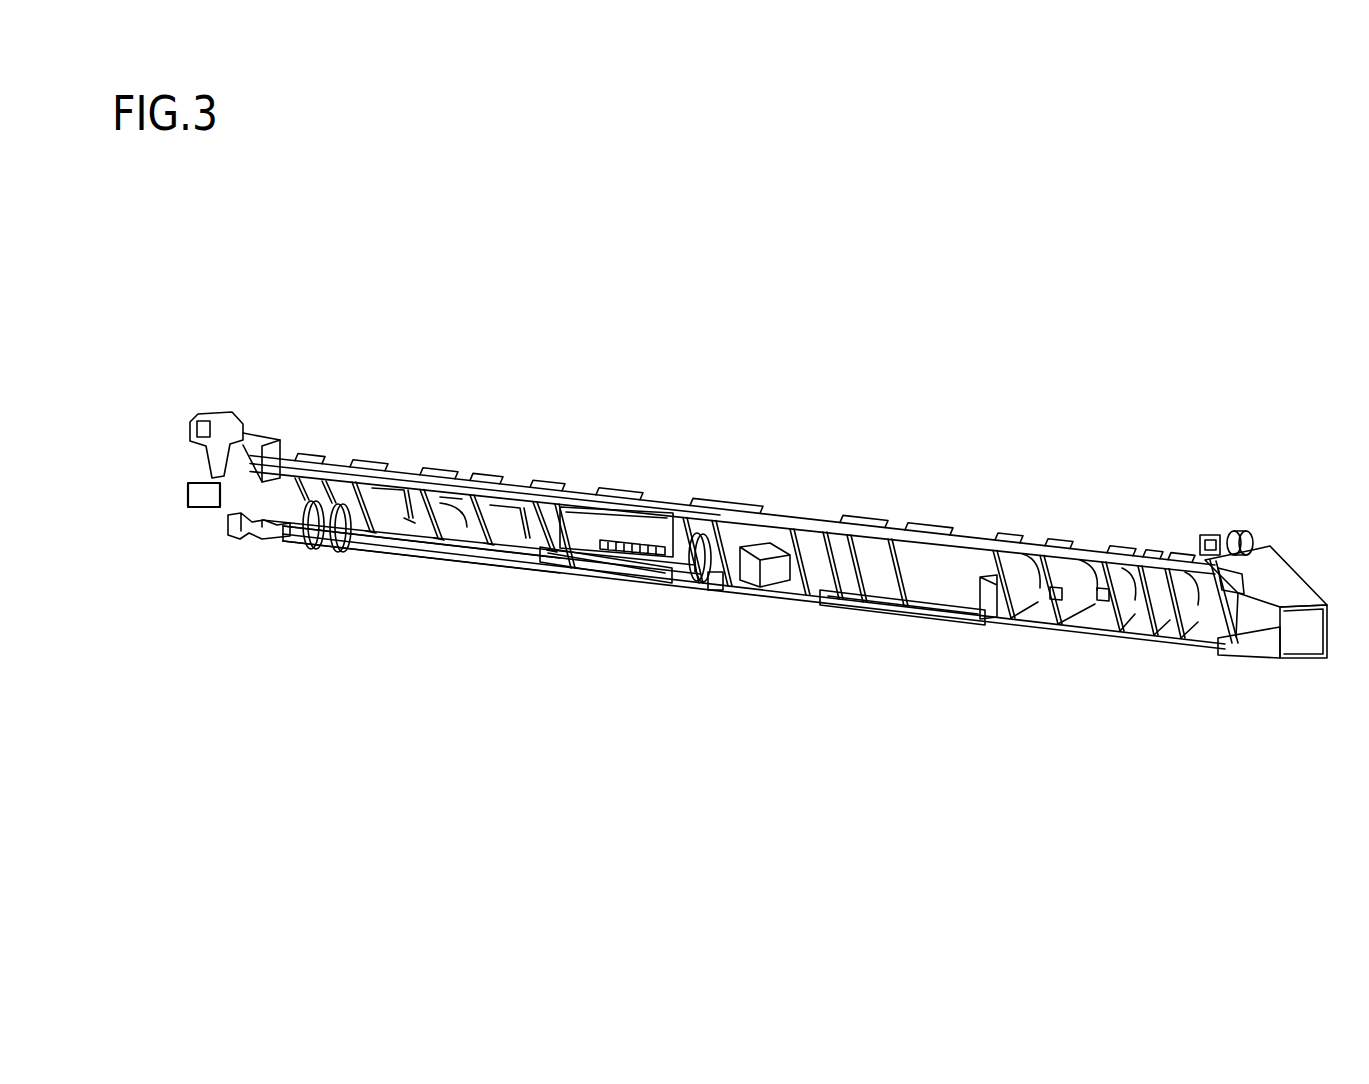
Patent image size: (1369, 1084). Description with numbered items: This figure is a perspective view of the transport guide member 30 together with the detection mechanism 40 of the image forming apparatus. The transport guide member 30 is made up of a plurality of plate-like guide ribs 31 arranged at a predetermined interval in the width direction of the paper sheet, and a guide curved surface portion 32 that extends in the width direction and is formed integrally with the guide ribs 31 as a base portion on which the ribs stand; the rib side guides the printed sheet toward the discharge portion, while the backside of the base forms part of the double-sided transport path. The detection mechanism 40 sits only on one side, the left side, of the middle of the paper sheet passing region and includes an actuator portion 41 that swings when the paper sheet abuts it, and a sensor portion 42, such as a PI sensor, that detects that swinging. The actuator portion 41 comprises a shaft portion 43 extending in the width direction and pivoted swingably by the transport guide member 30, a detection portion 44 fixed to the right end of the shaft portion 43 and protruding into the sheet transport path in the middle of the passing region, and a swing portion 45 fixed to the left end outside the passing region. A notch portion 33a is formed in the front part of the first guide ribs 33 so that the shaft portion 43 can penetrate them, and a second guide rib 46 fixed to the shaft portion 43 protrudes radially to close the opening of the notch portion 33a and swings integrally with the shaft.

The transport guide member 30 is at (1135, 494).
The guide rib 31 is at (1017, 596).
The guide curved surface portion 32 is at (753, 513).
The first guide ribs 33 is at (380, 468).
The notch portion 33a is at (470, 560).
The detection mechanism 40 is at (441, 583).
The actuator portion 41 is at (397, 560).
The sensor portion 42 is at (205, 508).
The shaft portion 43 is at (517, 548).
The detection portion 44 is at (714, 592).
The swing portion 45 is at (226, 417).
The second guide rib 46 is at (298, 463).